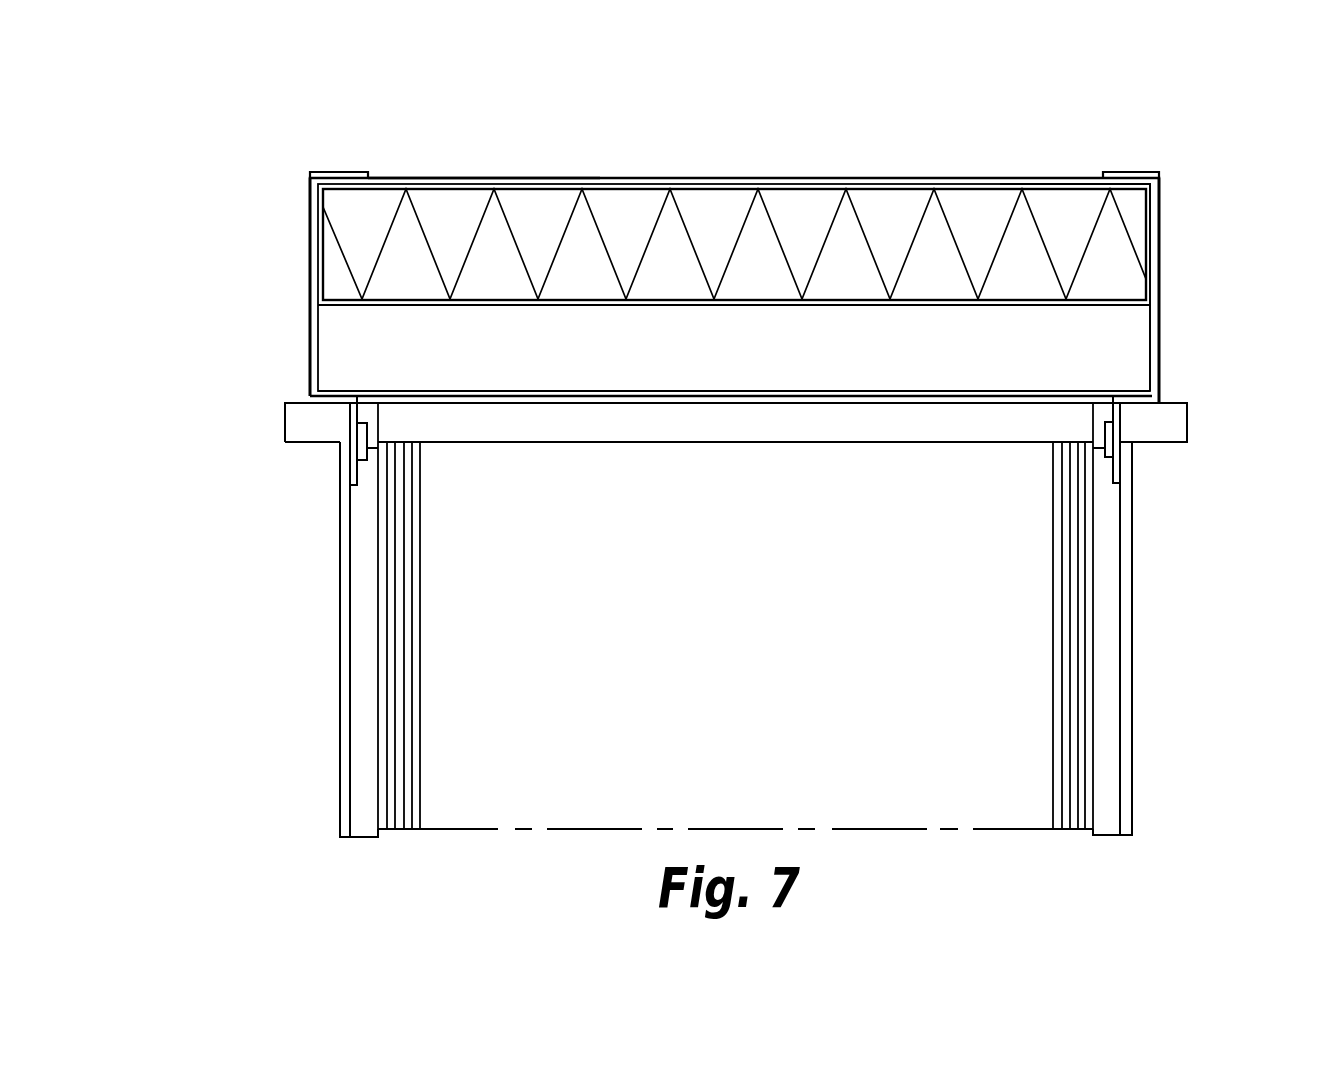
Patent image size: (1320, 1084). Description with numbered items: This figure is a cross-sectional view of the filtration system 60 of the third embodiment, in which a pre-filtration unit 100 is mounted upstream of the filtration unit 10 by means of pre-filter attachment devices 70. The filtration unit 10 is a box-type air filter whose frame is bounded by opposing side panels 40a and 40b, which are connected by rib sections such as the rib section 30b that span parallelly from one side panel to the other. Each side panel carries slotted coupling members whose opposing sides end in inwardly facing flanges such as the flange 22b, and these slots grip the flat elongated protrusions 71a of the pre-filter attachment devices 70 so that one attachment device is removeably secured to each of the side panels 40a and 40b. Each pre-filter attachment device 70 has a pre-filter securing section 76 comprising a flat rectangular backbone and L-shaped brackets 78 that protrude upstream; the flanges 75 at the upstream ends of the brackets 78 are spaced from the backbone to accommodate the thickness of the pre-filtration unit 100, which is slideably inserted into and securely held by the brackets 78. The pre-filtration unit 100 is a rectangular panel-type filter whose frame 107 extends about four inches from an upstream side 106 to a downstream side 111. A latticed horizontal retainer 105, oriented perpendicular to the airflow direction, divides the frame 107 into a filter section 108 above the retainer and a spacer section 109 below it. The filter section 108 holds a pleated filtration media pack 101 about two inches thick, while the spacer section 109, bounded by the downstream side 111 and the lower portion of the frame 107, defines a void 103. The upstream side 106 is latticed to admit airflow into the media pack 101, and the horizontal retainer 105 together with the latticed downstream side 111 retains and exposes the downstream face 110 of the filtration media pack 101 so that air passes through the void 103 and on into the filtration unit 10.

The filtration unit 10 is at (1161, 777).
The flange 22b is at (1113, 452).
The rib section 30b is at (450, 410).
The side panel 40a is at (340, 695).
The side panel 40b is at (1130, 610).
The filtration system 60 is at (202, 611).
The pre-filter attachment device 70 is at (1171, 247).
The flat elongated protrusion 71a is at (1120, 420).
The flange 75 is at (1140, 173).
The pre-filter securing section 76 is at (1209, 210).
The bracket 78 is at (1162, 333).
The pre-filtration unit 100 is at (536, 174).
The pleated filtration media pack 101 is at (590, 208).
The void 103 is at (758, 351).
The horizontal retainer 105 is at (640, 301).
The upstream side 106 is at (421, 179).
The frame 107 is at (1160, 181).
The filter section 108 is at (295, 247).
The spacer section 109 is at (295, 353).
The downstream face 110 is at (921, 302).
The downstream side 111 is at (817, 390).